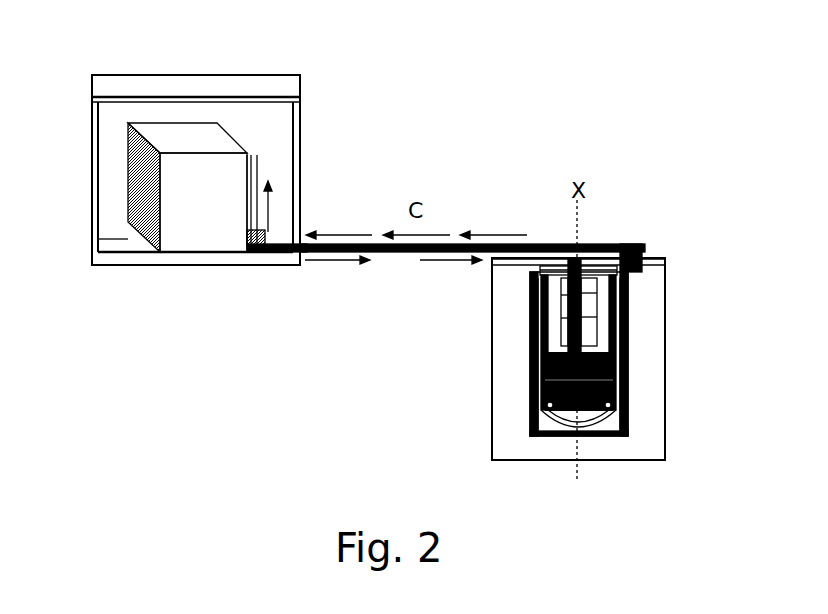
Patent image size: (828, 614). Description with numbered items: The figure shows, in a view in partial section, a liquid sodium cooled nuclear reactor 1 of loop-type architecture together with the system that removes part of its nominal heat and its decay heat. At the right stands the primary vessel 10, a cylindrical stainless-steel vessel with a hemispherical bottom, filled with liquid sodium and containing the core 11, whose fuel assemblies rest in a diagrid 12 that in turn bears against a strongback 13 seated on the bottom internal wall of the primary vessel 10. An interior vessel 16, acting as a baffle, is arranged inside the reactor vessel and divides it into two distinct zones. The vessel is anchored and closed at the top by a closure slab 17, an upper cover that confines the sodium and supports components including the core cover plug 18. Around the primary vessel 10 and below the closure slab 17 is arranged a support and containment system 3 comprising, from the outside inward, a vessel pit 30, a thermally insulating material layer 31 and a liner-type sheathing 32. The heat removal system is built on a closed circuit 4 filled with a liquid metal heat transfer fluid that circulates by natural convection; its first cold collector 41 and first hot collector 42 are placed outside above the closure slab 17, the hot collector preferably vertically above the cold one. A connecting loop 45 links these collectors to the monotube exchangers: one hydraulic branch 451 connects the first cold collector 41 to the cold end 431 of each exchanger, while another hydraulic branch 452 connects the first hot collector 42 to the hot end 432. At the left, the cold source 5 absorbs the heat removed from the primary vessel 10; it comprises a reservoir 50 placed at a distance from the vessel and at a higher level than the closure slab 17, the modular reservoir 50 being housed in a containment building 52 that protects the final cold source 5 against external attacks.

The liquid sodium cooled nuclear reactor 1 is at (491, 170).
The support and containment system 3 is at (432, 405).
The closed circuit 4 is at (381, 216).
The cold source 5 is at (240, 292).
The primary vessel 10 is at (603, 437).
The core 11 is at (626, 370).
The diagrid 12 is at (625, 395).
The strongback 13 is at (628, 412).
The interior vessel 16 is at (627, 322).
The closure slab 17 is at (598, 257).
The core cover plug 18 is at (560, 318).
The vessel pit 30 is at (517, 393).
The thermally insulating material layer 31 is at (527, 420).
The liner-type sheathing 32 is at (525, 428).
The first cold collector 41 is at (665, 272).
The first hot collector 42 is at (634, 252).
The connecting loop 45 is at (458, 341).
The reservoir 50 is at (185, 263).
The containment building 52 is at (95, 268).
The cold end of monotube exchanger 431 is at (253, 258).
The hot end of monotube exchanger 432 is at (248, 157).
The hydraulic branch 451 is at (420, 253).
The hydraulic branch 452 is at (385, 253).